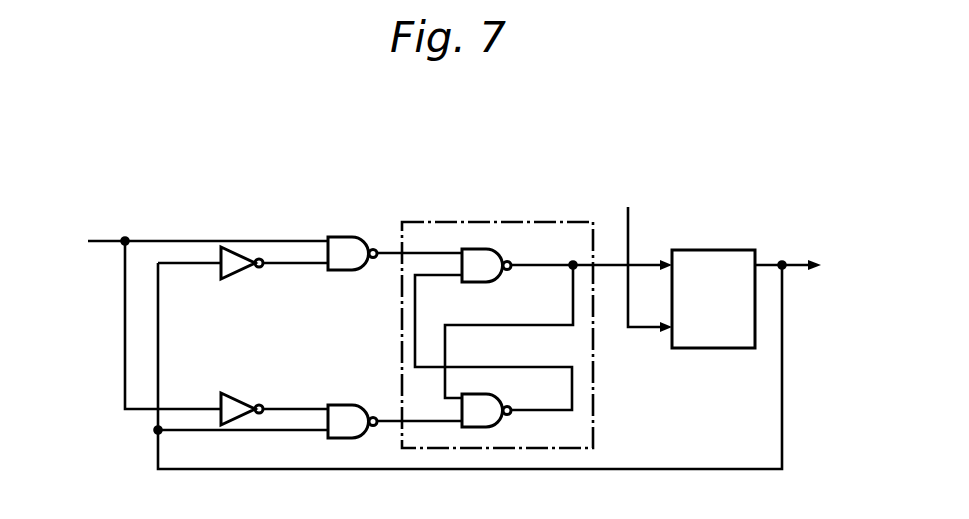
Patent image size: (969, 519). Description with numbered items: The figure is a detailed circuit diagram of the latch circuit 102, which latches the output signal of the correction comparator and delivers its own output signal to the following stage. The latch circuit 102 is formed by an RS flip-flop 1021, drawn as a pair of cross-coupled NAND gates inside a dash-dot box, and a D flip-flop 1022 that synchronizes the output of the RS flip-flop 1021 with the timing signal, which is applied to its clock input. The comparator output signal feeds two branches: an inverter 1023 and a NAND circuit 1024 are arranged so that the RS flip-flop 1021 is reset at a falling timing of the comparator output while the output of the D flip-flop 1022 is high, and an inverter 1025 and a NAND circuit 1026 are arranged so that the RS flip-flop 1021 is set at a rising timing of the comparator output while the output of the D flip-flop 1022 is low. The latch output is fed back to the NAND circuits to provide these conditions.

The latch circuit 102 is at (456, 166).
The RS flip-flop 1021 is at (505, 222).
The D flip-flop 1022 is at (712, 250).
The inverter 1023 is at (249, 375).
The NAND circuit 1024 is at (340, 405).
The inverter 1025 is at (243, 276).
The NAND circuit 1026 is at (343, 237).